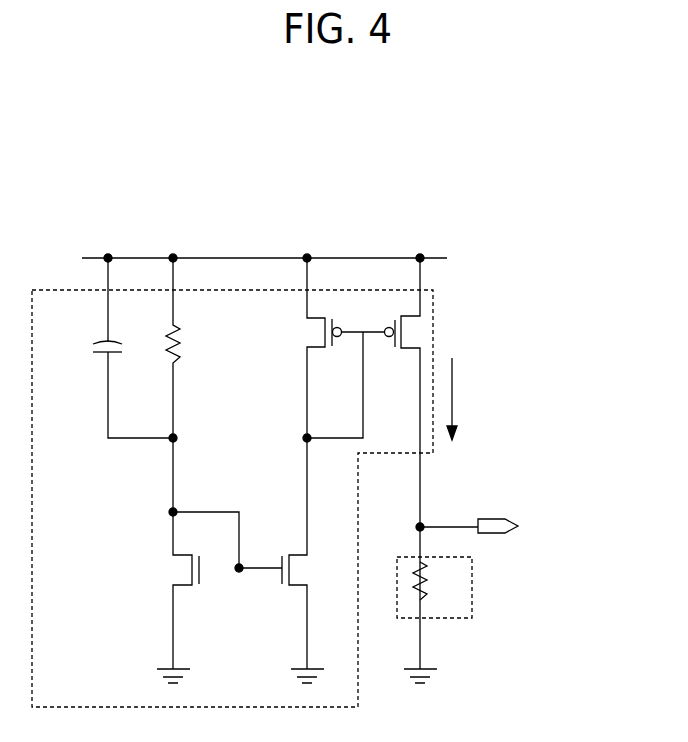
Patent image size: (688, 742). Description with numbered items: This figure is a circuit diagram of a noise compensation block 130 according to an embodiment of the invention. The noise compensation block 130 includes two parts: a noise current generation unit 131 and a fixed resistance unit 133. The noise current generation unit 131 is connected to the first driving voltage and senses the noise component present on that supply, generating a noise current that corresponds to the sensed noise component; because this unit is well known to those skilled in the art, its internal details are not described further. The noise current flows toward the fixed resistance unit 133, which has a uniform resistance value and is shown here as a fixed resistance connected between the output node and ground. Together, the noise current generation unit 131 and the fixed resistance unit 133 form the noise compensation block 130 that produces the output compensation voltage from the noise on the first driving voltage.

The noise compensation block 130 is at (76, 185).
The noise current generation unit 131 is at (434, 296).
The fixed resistance unit 133 is at (473, 577).